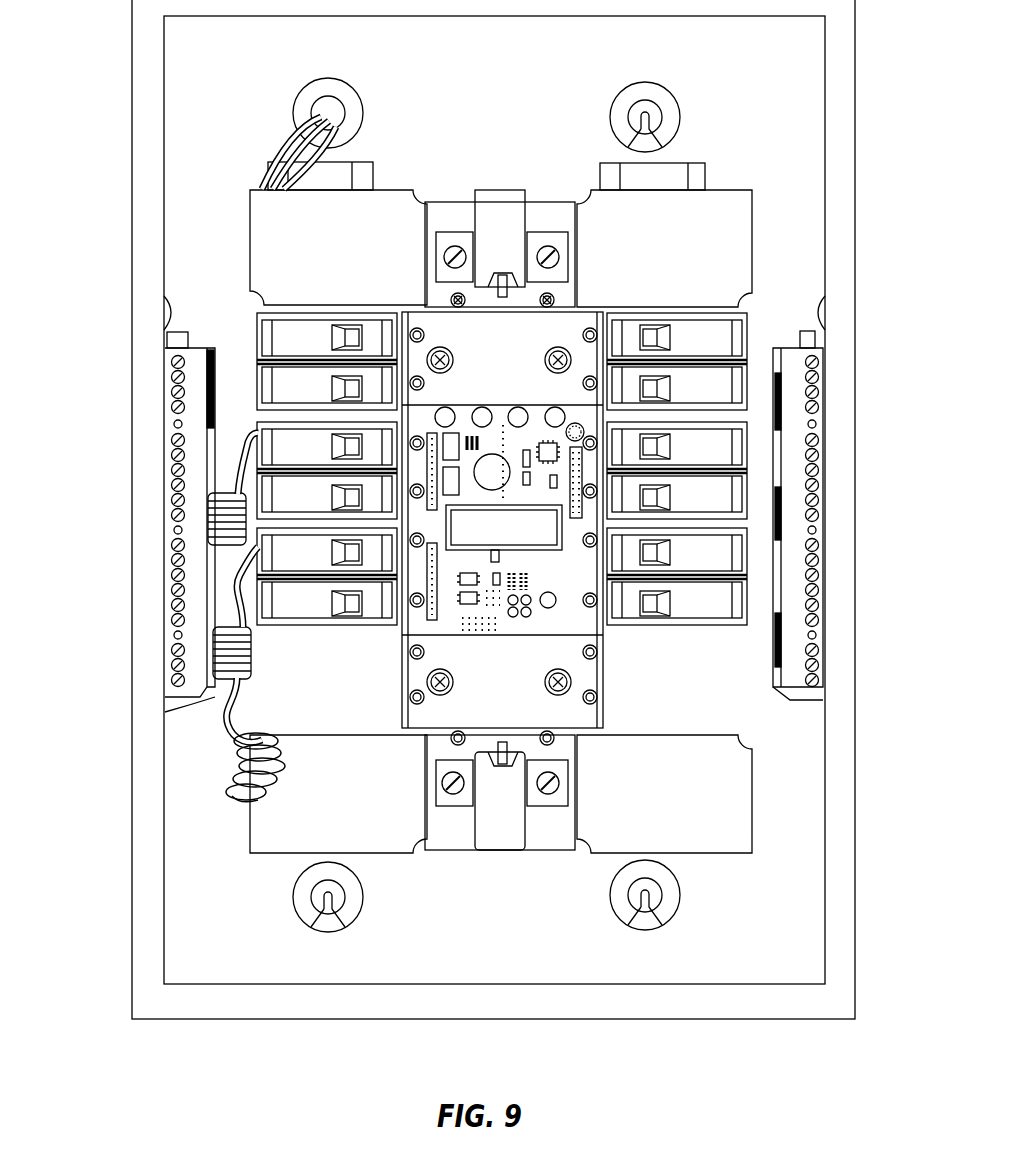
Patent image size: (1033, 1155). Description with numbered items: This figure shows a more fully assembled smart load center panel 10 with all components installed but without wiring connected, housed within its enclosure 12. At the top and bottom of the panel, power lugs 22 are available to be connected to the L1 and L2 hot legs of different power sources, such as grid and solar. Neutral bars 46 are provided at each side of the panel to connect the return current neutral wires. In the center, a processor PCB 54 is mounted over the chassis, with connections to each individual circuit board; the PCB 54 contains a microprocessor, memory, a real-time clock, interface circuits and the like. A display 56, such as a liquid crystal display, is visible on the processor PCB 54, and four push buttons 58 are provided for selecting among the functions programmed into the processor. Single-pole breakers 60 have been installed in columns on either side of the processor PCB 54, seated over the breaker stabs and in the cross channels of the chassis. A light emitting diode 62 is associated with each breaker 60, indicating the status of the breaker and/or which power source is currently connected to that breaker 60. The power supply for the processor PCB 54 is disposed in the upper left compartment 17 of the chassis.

The smart load center panel 10 is at (117, 591).
The enclosure 12 is at (845, 154).
The upper left compartment 17 is at (378, 223).
The power lugs 22 is at (547, 250).
The neutral bars 46 is at (817, 422).
The processor PCB 54 is at (502, 614).
The display 56 is at (504, 527).
The push buttons 58 is at (552, 408).
The single-pole breakers 60 is at (700, 383).
The light emitting diode 62 is at (596, 380).